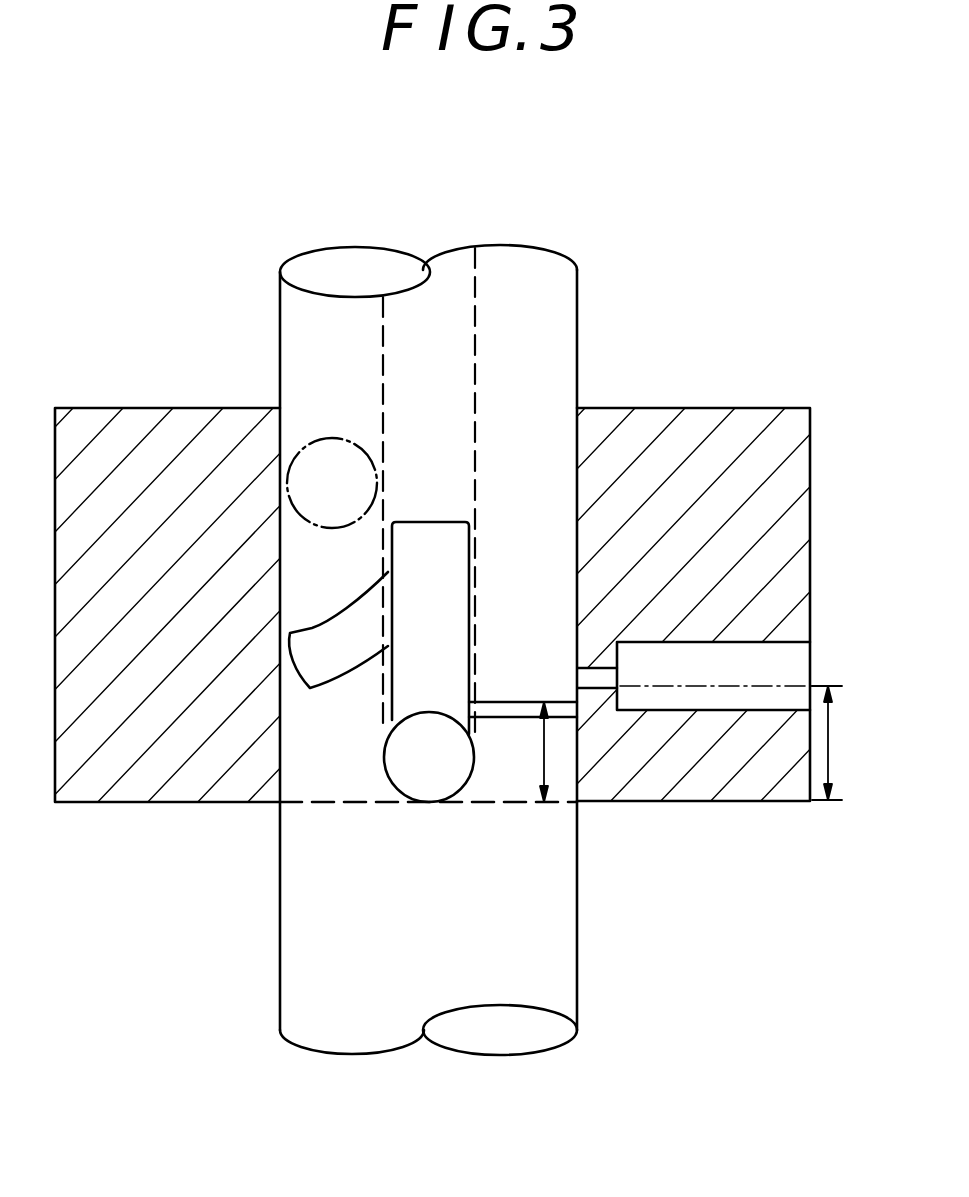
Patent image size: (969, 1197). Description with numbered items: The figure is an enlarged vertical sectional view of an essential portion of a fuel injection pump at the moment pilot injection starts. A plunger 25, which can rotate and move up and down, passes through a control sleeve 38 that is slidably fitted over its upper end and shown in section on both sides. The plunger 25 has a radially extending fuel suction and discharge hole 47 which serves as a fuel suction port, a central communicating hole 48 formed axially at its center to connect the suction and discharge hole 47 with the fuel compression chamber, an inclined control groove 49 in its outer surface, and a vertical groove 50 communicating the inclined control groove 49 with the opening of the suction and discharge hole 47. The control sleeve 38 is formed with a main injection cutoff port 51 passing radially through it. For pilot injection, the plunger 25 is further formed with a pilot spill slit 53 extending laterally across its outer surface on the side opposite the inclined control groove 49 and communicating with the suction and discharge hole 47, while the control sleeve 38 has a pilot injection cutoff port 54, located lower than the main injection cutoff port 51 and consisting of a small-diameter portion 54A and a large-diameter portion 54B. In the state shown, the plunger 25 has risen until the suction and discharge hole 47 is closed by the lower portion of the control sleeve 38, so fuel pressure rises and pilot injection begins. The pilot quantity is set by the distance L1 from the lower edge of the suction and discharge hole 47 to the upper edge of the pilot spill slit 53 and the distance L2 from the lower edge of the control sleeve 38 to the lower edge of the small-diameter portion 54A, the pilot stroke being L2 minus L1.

The plunger 25 is at (318, 1023).
The control sleeve 38 is at (99, 786).
The fuel suction and discharge hole 47 is at (386, 778).
The central communicating hole 48 is at (452, 300).
The inclined control groove 49 is at (322, 627).
The vertical groove 50 is at (467, 550).
The main injection cutoff port 51 is at (331, 447).
The pilot spill slit 53 is at (507, 707).
The pilot injection cutoff port 54 is at (720, 480).
The small-diameter portion 54A is at (600, 688).
The large-diameter portion 54B is at (697, 642).
The distance L1 is at (545, 755).
The distance L2 is at (845, 743).